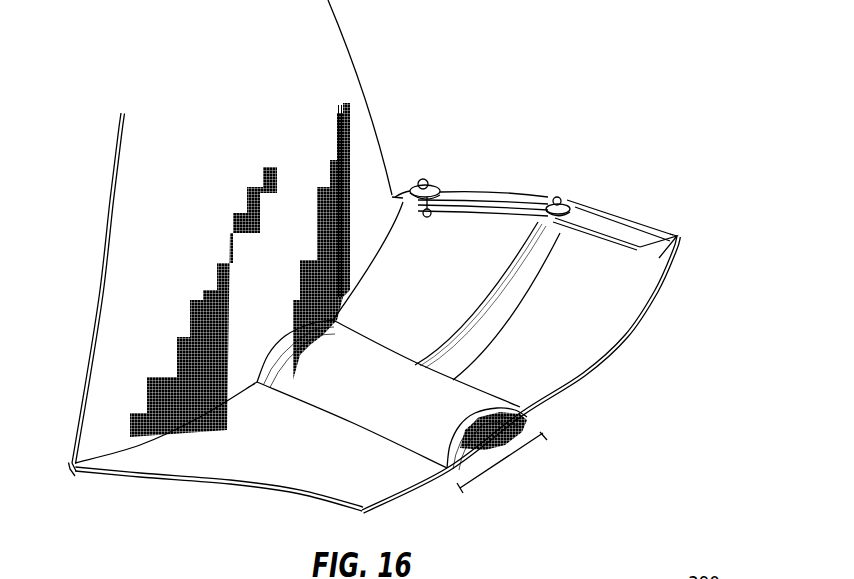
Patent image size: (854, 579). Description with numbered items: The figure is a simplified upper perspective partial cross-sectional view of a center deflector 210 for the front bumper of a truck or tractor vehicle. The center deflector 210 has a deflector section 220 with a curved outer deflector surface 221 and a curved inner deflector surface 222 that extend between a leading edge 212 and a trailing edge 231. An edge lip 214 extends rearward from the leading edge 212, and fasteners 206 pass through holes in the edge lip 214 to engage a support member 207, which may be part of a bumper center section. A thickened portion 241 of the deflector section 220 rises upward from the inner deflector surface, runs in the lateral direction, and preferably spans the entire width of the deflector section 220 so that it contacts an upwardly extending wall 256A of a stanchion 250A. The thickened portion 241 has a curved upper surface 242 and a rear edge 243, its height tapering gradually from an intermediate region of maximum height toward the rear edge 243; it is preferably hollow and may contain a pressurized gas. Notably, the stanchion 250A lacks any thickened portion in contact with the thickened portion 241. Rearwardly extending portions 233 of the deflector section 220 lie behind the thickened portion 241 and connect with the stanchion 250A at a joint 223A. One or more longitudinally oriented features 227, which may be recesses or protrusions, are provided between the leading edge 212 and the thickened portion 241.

The center deflector 210 is at (386, 266).
The stanchion 250A is at (179, 96).
The upwardly extending wall 256A is at (152, 183).
The fasteners 206 is at (425, 178).
The longitudinally oriented features 227 is at (528, 243).
The edge lip 214 is at (613, 220).
The leading edge 212 is at (677, 235).
The support member 207 is at (640, 250).
The curved inner deflector surface 222 is at (637, 325).
The deflector section 220 is at (618, 348).
The curved outer deflector surface 221 is at (580, 360).
The curved upper surface 242 is at (477, 395).
The thickened portion 241 is at (503, 465).
The rear edge 243 is at (447, 465).
The trailing edge 231 is at (257, 488).
The rearwardly extending portions 233 is at (187, 467).
The joint 223A is at (118, 455).